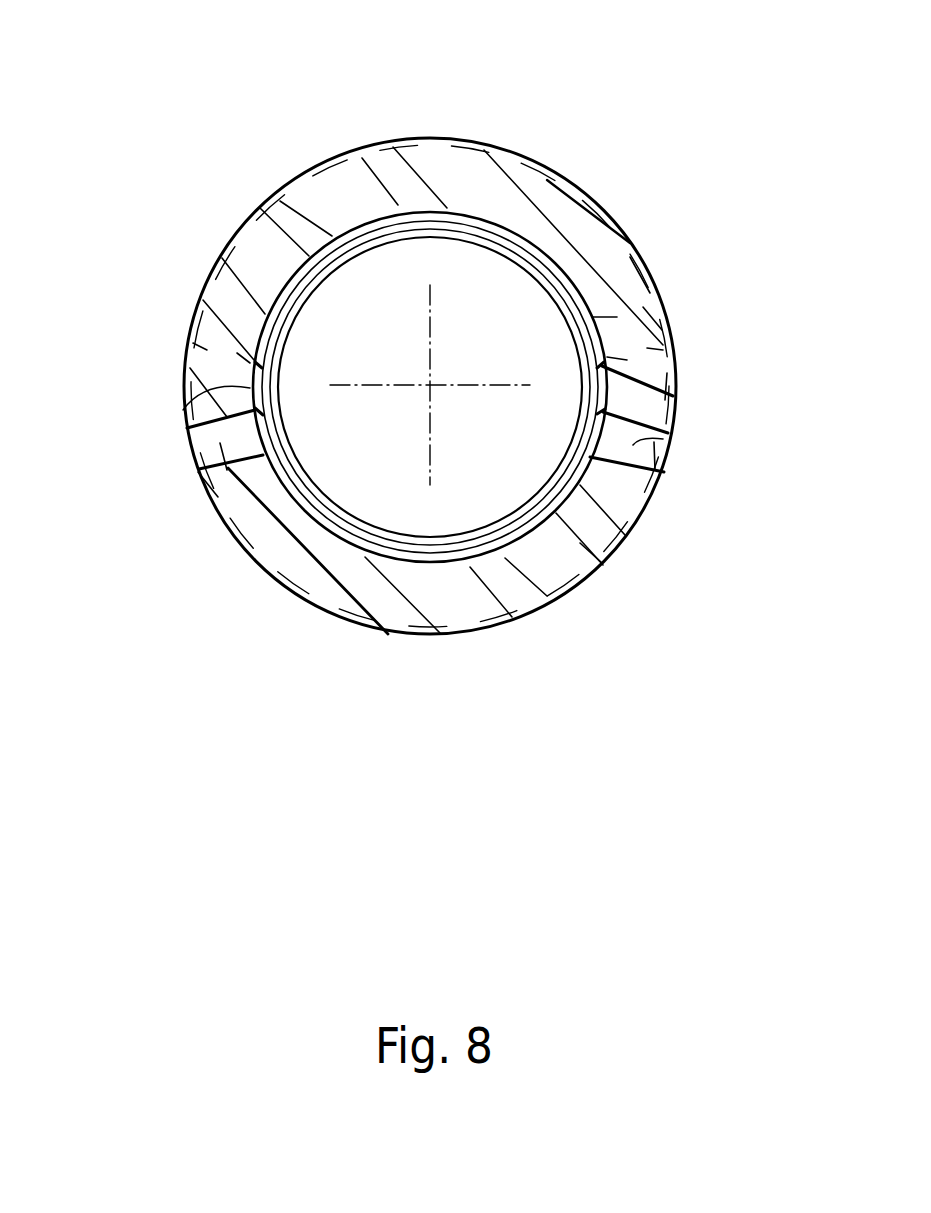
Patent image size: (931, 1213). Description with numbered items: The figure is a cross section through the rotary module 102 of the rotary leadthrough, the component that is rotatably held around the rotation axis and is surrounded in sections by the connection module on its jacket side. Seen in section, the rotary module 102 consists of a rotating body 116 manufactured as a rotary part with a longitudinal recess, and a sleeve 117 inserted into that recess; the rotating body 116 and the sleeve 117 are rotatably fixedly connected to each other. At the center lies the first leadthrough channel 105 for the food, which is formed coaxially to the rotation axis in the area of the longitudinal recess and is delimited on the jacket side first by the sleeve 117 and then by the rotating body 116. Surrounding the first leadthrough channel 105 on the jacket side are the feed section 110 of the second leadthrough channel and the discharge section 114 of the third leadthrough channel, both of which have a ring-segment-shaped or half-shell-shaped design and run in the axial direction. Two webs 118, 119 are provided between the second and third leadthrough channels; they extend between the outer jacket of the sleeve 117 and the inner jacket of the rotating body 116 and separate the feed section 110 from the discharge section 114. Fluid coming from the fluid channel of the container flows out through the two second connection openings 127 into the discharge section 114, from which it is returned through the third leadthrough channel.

The rotary module 102 is at (528, 148).
The first leadthrough channel 105 is at (518, 453).
The feed section 110 is at (410, 212).
The discharge section 114 is at (384, 557).
The rotating body 116 is at (467, 602).
The sleeve 117 is at (337, 517).
The web 118 is at (683, 398).
The web 119 is at (183, 410).
The second connection opening 127 is at (664, 472).